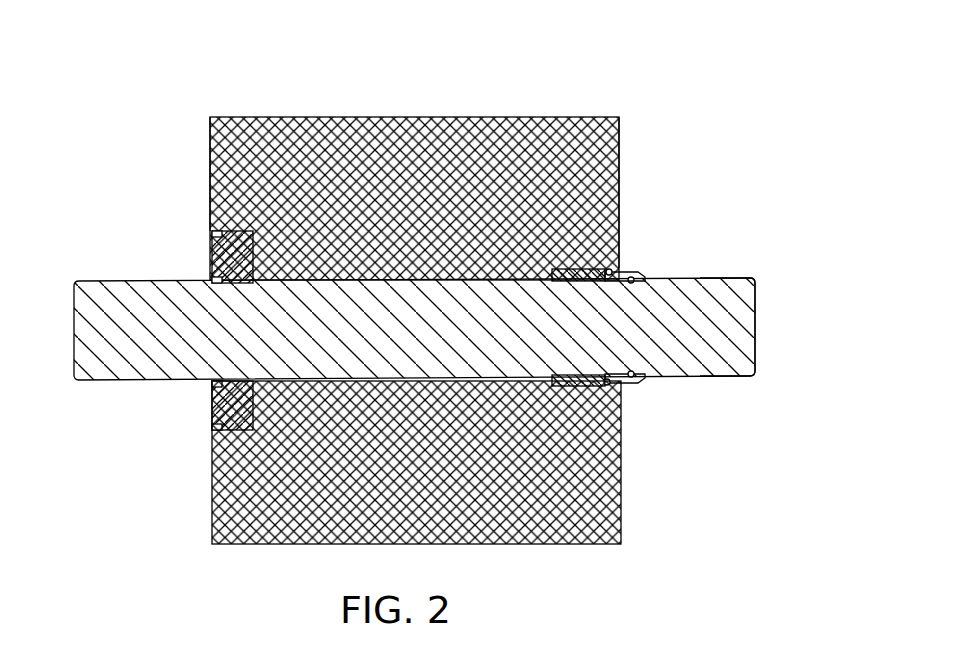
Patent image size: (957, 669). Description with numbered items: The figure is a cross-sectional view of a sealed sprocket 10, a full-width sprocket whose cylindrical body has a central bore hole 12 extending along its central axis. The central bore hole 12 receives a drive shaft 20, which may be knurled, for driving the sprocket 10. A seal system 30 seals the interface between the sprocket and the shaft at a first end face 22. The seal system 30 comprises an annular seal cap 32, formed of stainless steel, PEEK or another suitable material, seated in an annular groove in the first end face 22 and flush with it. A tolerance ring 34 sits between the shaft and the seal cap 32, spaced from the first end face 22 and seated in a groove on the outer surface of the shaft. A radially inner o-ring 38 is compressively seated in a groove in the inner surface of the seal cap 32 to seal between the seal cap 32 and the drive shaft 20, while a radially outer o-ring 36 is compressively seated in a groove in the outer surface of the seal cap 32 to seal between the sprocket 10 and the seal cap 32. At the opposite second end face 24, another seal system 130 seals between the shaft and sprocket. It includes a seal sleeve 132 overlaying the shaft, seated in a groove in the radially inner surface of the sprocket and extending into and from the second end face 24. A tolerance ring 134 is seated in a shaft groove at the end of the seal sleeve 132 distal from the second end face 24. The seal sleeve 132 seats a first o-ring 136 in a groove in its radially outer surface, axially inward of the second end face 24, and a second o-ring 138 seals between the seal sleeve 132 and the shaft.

The sealed sprocket 10 is at (513, 140).
The central bore hole 12 is at (317, 280).
The drive shaft 20 is at (702, 293).
The first end face 22 is at (205, 160).
The second end face 24 is at (618, 158).
The seal system 30 is at (203, 257).
The seal cap 32 is at (209, 393).
The tolerance ring 34 is at (233, 382).
The radially outer o-ring 36 is at (213, 233).
The radially inner o-ring 38 is at (212, 277).
The seal system 130 is at (648, 400).
The seal sleeve 132 is at (640, 271).
The tolerance ring 134 is at (572, 283).
The first o-ring 136 is at (607, 387).
The second o-ring 138 is at (637, 375).